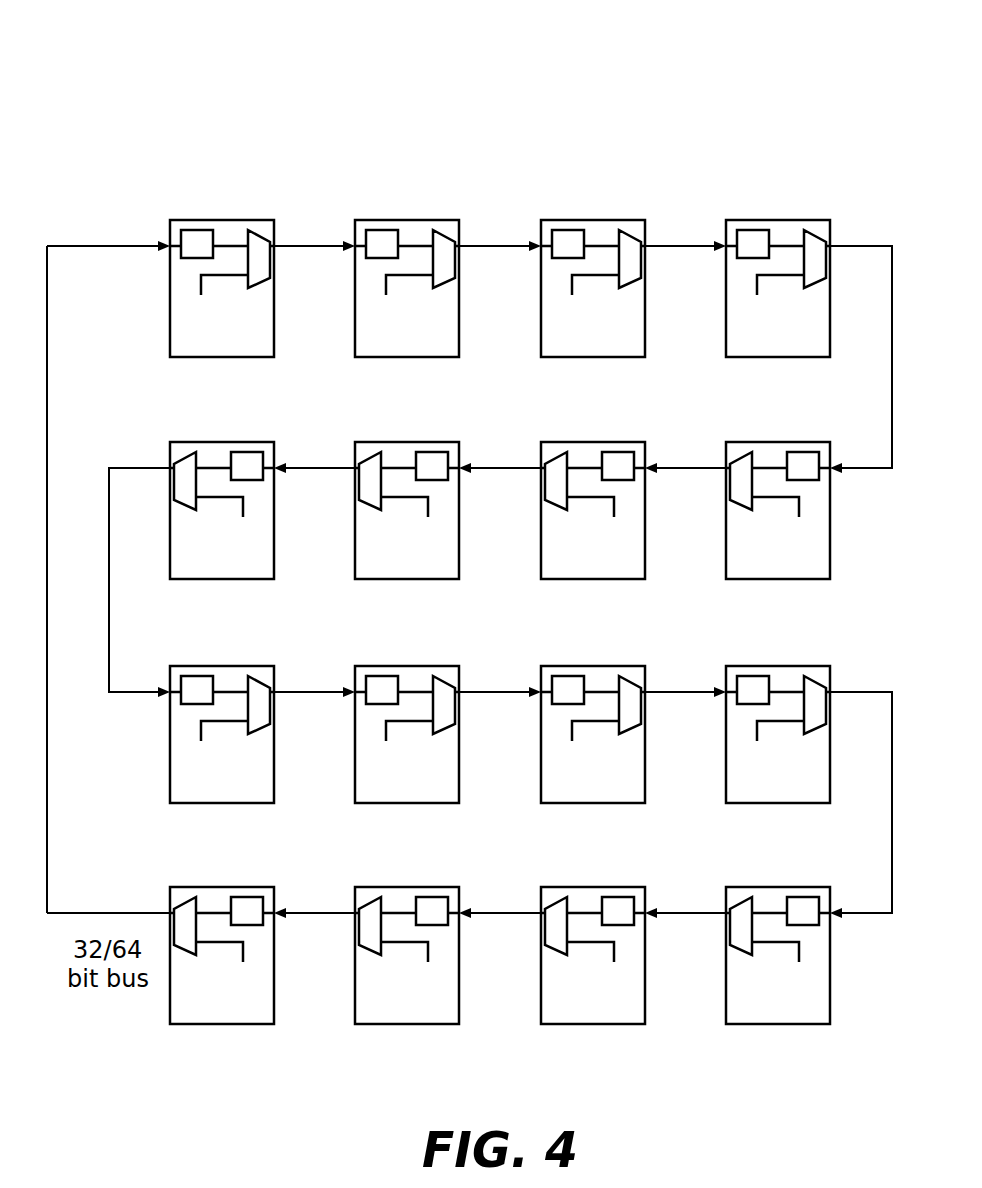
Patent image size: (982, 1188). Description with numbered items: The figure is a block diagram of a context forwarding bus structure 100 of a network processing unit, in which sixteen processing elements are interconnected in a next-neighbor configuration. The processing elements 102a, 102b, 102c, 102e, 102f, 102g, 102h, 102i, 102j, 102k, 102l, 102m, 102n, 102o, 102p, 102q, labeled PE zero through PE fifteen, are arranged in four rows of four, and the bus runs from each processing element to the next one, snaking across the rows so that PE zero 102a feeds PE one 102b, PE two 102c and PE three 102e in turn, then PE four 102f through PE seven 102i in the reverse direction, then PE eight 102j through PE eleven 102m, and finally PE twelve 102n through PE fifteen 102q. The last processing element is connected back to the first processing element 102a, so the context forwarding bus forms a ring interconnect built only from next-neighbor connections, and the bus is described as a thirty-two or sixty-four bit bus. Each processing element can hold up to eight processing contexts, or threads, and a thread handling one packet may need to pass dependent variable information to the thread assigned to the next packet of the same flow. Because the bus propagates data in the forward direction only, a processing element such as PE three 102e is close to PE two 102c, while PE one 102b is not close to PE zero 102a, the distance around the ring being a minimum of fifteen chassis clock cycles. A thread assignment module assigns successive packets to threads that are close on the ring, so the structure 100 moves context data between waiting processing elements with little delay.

The context forwarding bus structure 100 is at (737, 95).
The processing element PE0 102a is at (222, 220).
The processing element PE1 102b is at (407, 220).
The processing element PE2 102c is at (593, 220).
The processing element PE3 102e is at (778, 220).
The processing element PE4 102f is at (778, 442).
The processing element PE5 102g is at (593, 442).
The processing element PE6 102h is at (407, 442).
The processing element PE7 102i is at (222, 442).
The processing element PE8 102j is at (222, 666).
The processing element PE9 102k is at (407, 666).
The processing element PE10 102l is at (593, 666).
The processing element PE11 102m is at (778, 666).
The processing element PE12 102n is at (778, 887).
The processing element PE13 102o is at (593, 887).
The processing element PE14 102p is at (407, 887).
The processing element PE15 102q is at (222, 887).